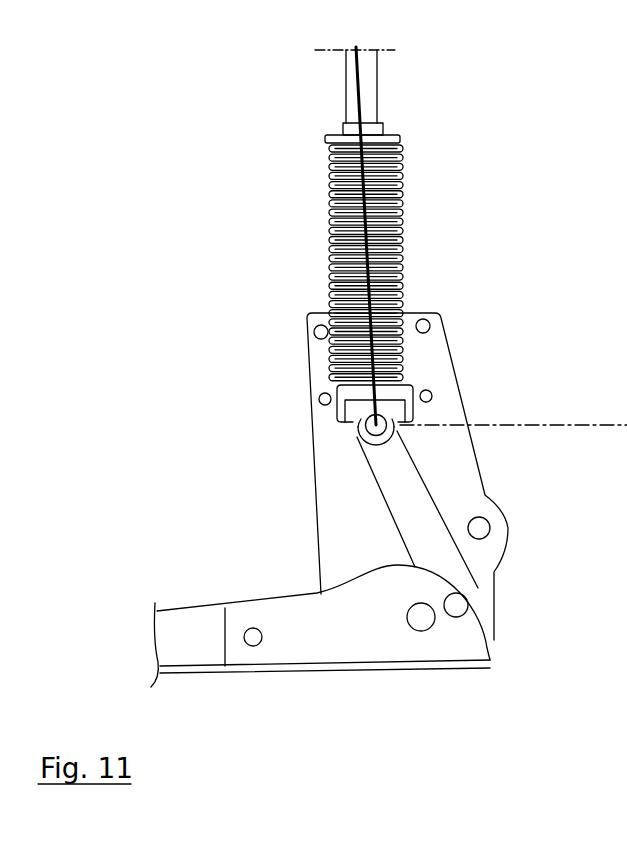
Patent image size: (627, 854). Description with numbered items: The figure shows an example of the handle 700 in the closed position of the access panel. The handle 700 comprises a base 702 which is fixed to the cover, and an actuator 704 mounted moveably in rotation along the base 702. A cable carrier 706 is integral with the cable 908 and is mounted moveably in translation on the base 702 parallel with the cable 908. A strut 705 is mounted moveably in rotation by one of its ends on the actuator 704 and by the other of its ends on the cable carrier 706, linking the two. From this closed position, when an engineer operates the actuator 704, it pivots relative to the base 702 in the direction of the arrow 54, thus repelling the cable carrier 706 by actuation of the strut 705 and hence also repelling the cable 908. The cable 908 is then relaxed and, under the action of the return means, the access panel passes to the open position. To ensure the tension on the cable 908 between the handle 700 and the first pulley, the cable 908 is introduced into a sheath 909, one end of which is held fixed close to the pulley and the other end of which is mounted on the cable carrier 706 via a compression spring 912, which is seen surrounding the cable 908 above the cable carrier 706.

The handle 700 is at (180, 183).
The base 702 is at (458, 457).
The actuator 704 is at (203, 652).
The strut 705 is at (425, 502).
The cable carrier 706 is at (400, 413).
The cable 908 is at (365, 98).
The sheath 909 is at (345, 65).
The compression spring 912 is at (390, 163).
The arrow 54 is at (273, 707).